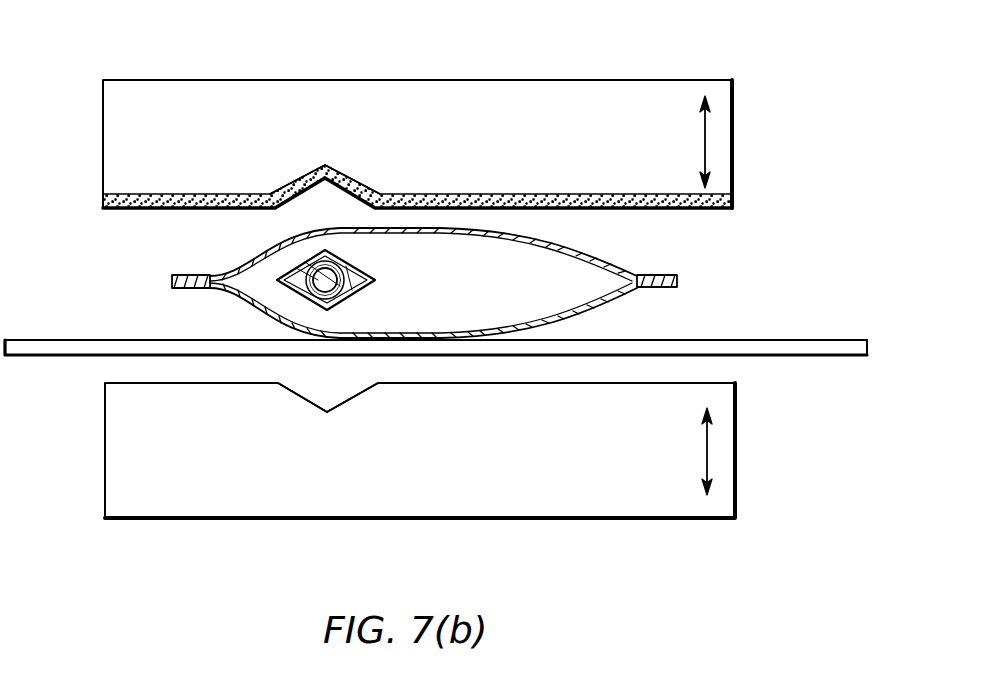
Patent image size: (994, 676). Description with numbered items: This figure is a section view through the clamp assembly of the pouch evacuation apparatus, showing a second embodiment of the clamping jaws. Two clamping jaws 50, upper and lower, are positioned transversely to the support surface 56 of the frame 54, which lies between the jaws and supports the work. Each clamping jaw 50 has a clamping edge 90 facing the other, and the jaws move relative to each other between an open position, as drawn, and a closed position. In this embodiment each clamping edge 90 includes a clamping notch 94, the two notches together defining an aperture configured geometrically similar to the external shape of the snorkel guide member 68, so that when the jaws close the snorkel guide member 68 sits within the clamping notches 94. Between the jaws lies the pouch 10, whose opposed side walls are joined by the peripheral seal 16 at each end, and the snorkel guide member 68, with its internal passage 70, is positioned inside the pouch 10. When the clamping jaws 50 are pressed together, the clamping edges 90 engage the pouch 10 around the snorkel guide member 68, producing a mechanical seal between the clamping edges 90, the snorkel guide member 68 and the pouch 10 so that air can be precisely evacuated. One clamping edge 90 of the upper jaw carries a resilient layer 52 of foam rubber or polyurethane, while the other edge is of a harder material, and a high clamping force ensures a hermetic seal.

The pouch 10 is at (593, 240).
The peripheral seal 16 is at (192, 275).
The clamping jaws 50 is at (615, 79).
The layer 52 is at (190, 193).
The frame 54 is at (867, 351).
The support surface 56 is at (762, 339).
The snorkel guide member 68 is at (357, 300).
The insert bore 70 is at (346, 262).
The clamping edges 90 is at (684, 380).
The clamping notch 94 is at (352, 188).